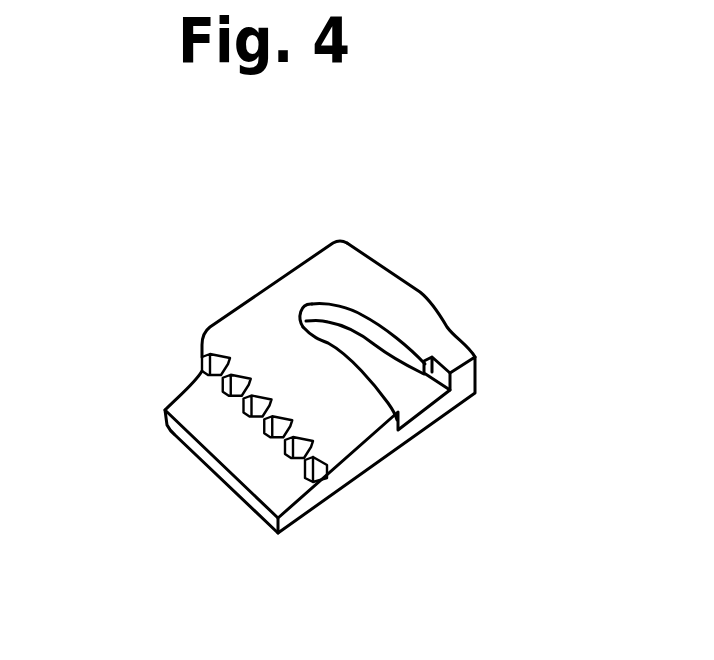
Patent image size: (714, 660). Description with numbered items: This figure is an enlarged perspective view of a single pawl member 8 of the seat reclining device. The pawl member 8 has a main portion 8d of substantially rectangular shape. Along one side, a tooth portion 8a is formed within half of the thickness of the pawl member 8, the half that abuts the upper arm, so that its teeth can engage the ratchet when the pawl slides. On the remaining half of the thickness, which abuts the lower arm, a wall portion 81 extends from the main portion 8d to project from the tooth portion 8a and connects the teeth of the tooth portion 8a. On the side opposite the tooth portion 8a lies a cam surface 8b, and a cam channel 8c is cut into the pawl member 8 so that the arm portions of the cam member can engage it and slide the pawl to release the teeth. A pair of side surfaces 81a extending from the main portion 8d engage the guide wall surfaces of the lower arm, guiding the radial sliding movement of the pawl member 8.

The pawl member 8 is at (365, 477).
The tooth portion 8a is at (263, 427).
The cam surface 8b is at (415, 283).
The cam channel 8c is at (397, 382).
The main portion 8d is at (349, 280).
The wall portion 81 is at (208, 438).
The side surfaces 81a is at (211, 474).